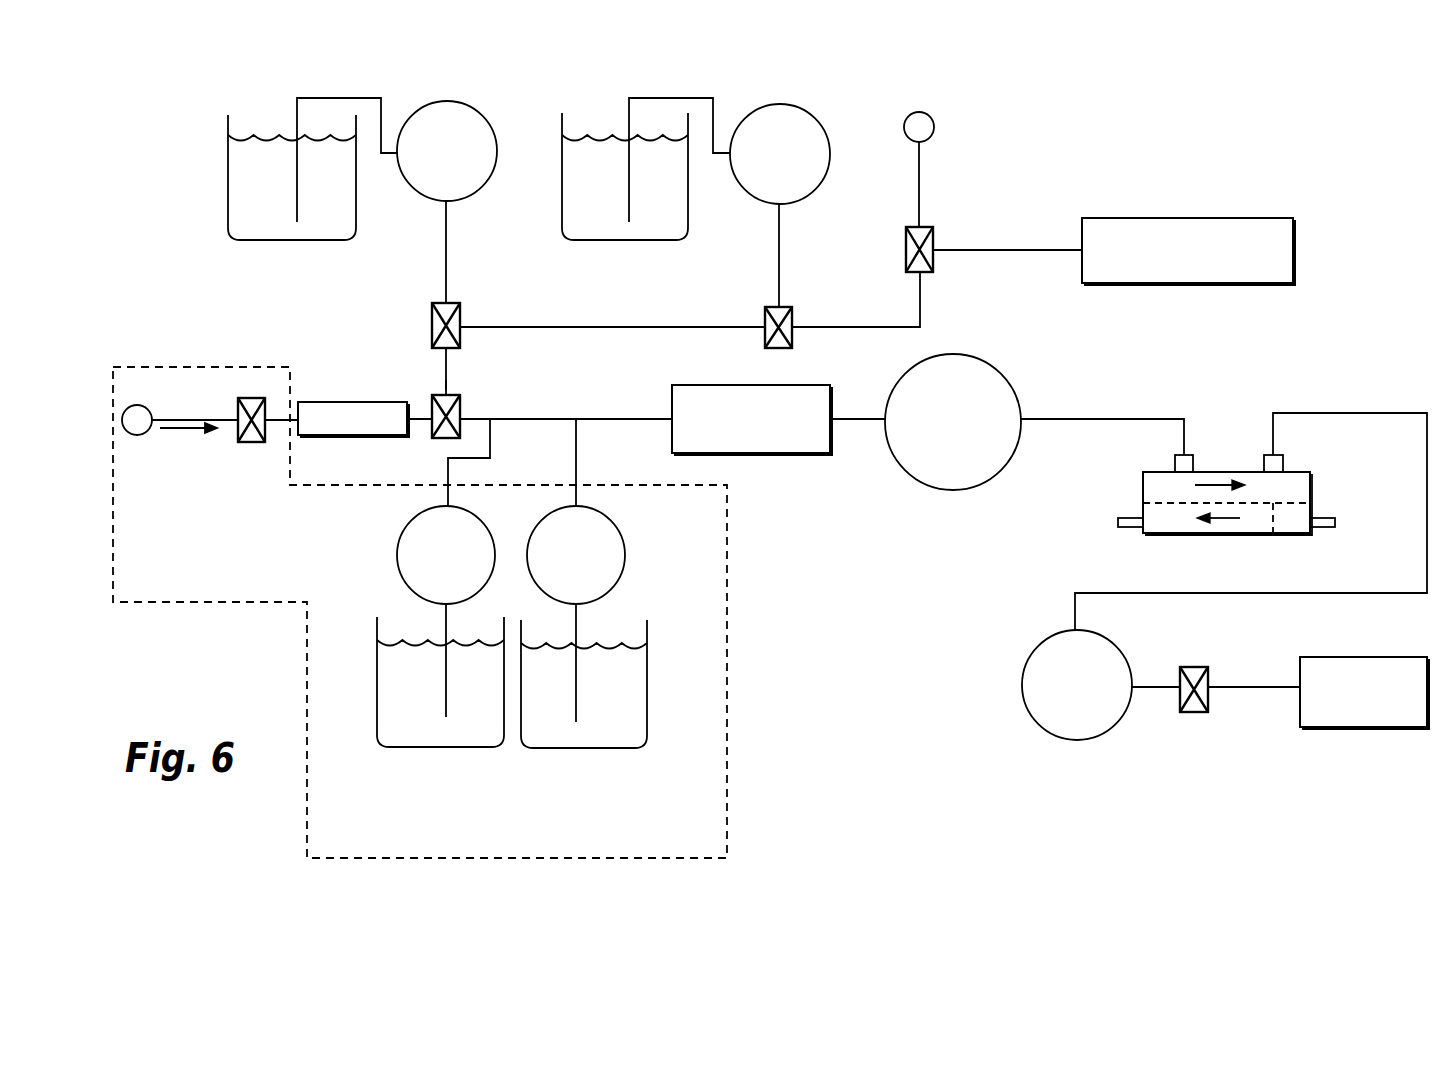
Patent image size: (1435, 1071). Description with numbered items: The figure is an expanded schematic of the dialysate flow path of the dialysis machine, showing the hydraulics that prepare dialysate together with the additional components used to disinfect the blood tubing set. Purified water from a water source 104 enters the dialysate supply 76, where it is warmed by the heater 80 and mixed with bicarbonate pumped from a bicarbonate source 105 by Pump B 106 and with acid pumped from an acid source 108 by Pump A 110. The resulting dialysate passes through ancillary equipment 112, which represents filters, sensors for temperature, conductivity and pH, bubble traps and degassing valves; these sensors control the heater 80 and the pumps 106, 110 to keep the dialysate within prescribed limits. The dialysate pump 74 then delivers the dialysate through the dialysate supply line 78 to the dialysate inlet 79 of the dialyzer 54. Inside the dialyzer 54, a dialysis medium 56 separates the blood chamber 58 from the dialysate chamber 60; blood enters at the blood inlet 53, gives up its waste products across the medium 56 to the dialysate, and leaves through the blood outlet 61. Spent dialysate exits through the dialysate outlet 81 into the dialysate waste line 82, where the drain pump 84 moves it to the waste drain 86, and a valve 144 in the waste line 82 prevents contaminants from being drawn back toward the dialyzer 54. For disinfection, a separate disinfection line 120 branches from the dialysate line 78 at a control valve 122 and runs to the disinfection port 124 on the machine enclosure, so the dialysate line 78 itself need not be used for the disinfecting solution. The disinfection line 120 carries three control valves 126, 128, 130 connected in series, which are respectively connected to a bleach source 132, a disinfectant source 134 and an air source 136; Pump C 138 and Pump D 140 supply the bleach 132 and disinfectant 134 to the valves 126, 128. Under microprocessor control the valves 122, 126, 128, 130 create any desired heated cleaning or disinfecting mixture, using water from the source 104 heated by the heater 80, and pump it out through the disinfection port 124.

The blood inlet 53 is at (1335, 523).
The dialyzer 54 is at (1297, 472).
The dialysis medium 56 is at (1273, 533).
The blood chamber 58 is at (1180, 533).
The dialysate chamber 60 is at (1157, 485).
The blood outlet 61 is at (1118, 522).
The dialysate pump 74 is at (1000, 377).
The dialysate supply 76 is at (727, 525).
The dialysate supply line 78 is at (1137, 420).
The dialysate inlet 79 is at (1175, 465).
The heater 80 is at (348, 402).
The dialysate outlet 81 is at (1265, 465).
The dialysate waste line 82 is at (1307, 413).
The drain pump 84 is at (1105, 733).
The waste drain 86 is at (1320, 727).
The water source 104 is at (140, 435).
The bicarbonate source 105 is at (378, 682).
The Pump B 106 is at (397, 560).
The acid source 108 is at (647, 708).
The Pump A 110 is at (623, 572).
The ancillary equipment 112 is at (835, 445).
The disinfection line 120 is at (1005, 250).
The control valve 122 is at (432, 438).
The disinfection port 124 is at (1162, 218).
The control valve 126 is at (432, 327).
The control valve 128 is at (787, 308).
The control valve 130 is at (933, 272).
The bleach source 132 is at (228, 168).
The disinfectant source 134 is at (562, 183).
The air source 136 is at (934, 132).
The Pump C 138 is at (492, 125).
The Pump D 140 is at (828, 160).
The valve 144 is at (1208, 712).